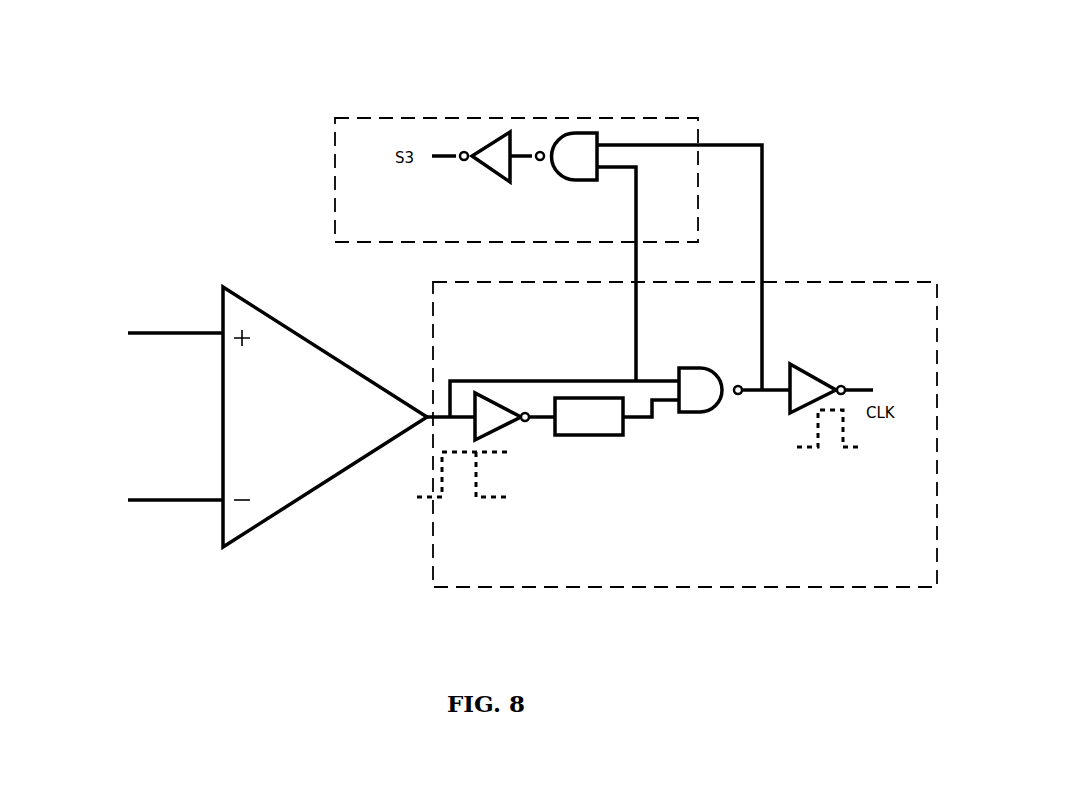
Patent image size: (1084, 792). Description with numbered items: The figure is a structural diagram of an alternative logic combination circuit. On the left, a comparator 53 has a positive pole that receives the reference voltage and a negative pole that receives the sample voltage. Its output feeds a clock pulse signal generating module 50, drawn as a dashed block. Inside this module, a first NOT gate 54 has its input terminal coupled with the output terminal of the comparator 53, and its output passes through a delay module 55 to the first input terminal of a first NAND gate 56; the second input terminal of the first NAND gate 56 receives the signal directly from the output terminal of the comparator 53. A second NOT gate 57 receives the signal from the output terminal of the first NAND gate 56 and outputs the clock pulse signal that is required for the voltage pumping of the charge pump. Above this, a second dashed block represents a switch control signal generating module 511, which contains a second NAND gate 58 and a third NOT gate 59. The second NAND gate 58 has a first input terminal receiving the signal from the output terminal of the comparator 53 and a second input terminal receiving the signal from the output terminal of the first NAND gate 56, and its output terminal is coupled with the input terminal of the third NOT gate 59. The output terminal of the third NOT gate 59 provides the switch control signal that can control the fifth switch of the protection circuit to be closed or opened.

The clock pulse signal generating module 50 is at (828, 282).
The comparator 53 is at (295, 460).
The first NOT gate 54 is at (500, 427).
The delay module 55 is at (602, 425).
The first NAND gate 56 is at (702, 407).
The second NOT gate 57 is at (807, 378).
The second NAND gate 58 is at (573, 173).
The third NOT gate 59 is at (479, 168).
The switch control signal generating module 511 is at (633, 118).